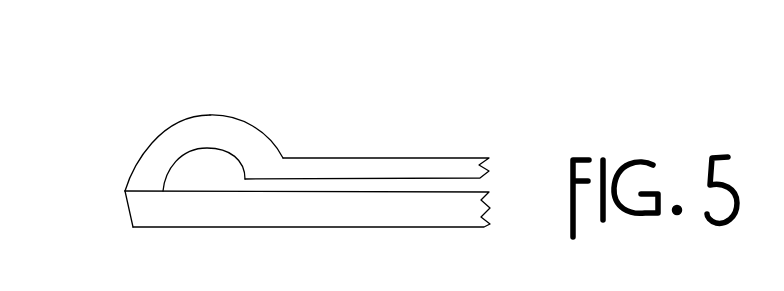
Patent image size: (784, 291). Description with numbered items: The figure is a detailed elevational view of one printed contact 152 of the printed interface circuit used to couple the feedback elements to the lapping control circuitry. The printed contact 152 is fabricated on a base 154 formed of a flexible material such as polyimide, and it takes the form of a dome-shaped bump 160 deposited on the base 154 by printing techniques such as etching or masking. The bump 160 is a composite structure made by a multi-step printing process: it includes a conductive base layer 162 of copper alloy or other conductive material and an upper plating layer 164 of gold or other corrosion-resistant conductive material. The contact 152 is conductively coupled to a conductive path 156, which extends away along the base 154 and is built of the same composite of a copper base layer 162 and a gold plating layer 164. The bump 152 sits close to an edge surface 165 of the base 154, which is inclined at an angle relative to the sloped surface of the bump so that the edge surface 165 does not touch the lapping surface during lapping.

The printed contact 152 is at (217, 103).
The base 154 is at (313, 208).
The conductive path 156 is at (388, 149).
The dome-shaped bump 160 is at (254, 127).
The conductive base layer 162 is at (204, 167).
The upper plating layer 164 is at (163, 134).
The edge surface 165 is at (127, 204).